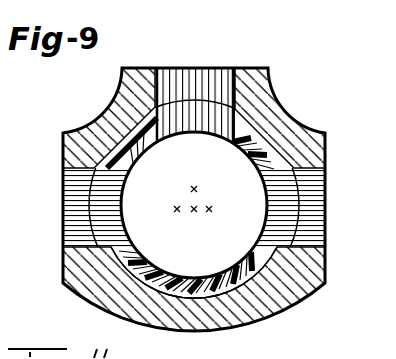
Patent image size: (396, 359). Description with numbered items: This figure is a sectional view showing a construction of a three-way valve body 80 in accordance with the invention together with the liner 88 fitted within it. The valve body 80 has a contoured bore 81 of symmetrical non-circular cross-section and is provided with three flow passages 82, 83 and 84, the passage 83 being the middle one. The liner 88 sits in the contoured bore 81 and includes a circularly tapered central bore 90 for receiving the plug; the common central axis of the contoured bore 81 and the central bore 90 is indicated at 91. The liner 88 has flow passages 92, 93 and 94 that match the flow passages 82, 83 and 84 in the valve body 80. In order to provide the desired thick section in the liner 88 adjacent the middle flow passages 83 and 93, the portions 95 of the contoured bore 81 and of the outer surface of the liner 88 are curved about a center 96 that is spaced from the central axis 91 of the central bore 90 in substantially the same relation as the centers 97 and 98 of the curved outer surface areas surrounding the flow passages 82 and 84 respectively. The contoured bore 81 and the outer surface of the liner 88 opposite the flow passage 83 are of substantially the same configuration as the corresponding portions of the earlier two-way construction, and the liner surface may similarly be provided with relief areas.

The three-way valve body 80 is at (273, 98).
The contoured bore 81 is at (102, 287).
The flow passage 82 is at (72, 230).
The flow passage 83 is at (214, 78).
The flow passage 84 is at (319, 193).
The liner 88 is at (264, 318).
The central bore 90 is at (247, 173).
The central axis 91 is at (194, 213).
The flow passage 92 is at (97, 190).
The flow passage 93 is at (187, 100).
The flow passage 94 is at (293, 212).
The portions of the bore 95 is at (117, 89).
The center 96 is at (194, 186).
The center 97 is at (173, 209).
The center 98 is at (213, 209).